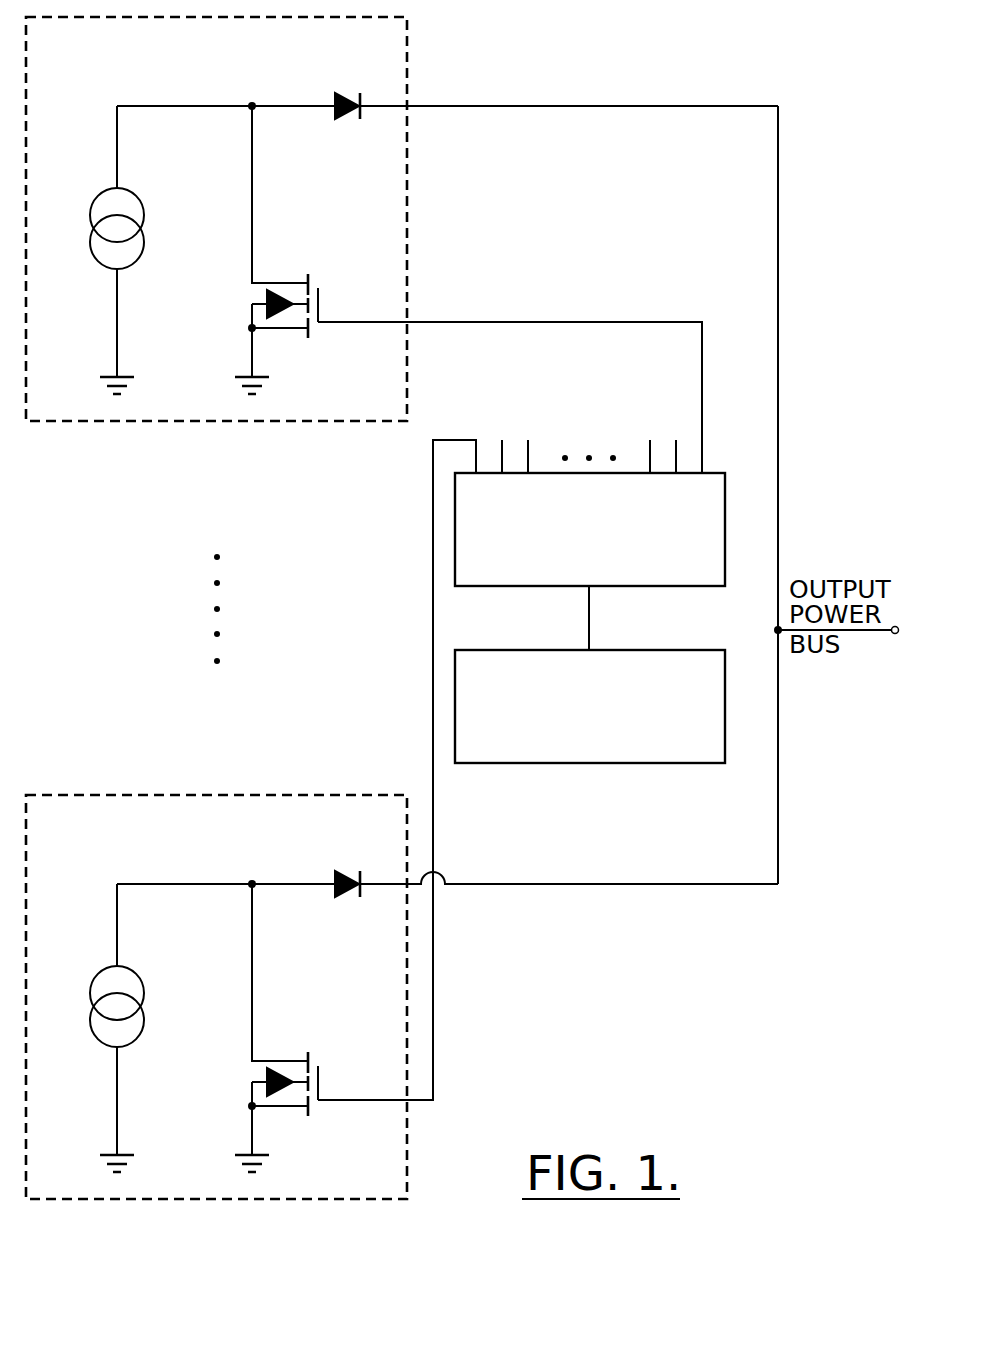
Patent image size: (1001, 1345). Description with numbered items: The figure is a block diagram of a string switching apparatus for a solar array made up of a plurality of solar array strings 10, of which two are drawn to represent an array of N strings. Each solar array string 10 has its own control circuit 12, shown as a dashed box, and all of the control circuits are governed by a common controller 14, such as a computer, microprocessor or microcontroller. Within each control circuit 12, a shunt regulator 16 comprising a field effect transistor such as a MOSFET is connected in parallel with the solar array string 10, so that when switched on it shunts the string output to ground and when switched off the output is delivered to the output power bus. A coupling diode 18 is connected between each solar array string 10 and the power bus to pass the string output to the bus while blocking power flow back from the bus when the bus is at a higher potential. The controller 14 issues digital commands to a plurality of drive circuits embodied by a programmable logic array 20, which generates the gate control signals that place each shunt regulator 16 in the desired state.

The solar array string 10 is at (108, 254).
The control circuit 12 is at (407, 200).
The controller 14 is at (645, 765).
The shunt regulator 16 is at (290, 346).
The coupling diode 18 is at (345, 117).
The programmable logic array 20 is at (645, 588).